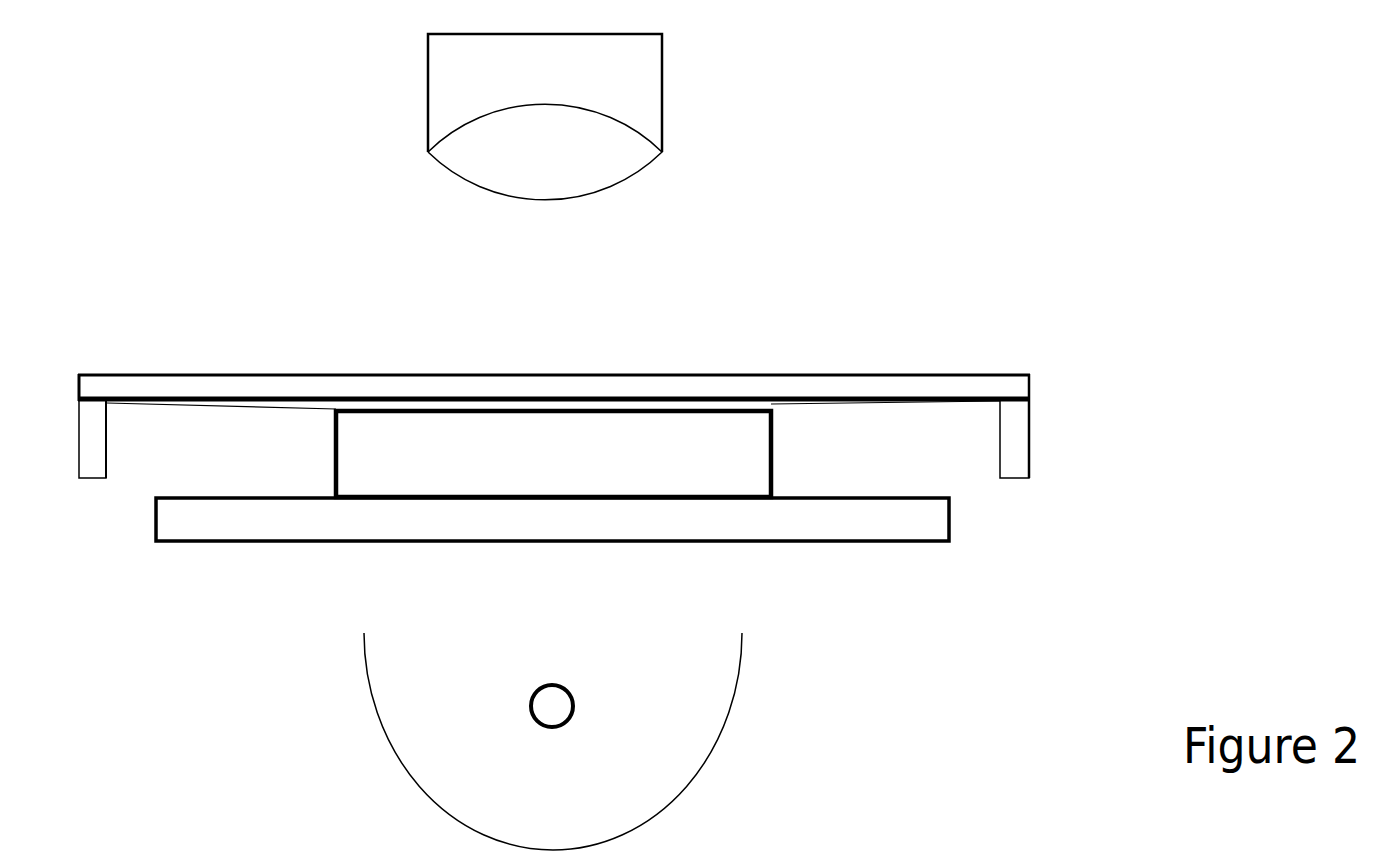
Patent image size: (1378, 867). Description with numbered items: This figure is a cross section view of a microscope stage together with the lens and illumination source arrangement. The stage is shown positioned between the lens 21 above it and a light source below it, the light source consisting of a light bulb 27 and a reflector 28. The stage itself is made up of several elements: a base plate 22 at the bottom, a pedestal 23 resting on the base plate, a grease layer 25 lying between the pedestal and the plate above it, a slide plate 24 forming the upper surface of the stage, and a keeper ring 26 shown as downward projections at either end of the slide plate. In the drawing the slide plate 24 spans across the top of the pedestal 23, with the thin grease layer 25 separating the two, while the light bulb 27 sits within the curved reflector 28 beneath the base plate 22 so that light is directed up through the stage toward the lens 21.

The lens 21 is at (623, 150).
The base plate 22 is at (880, 523).
The pedestal 23 is at (370, 468).
The slide plate 24 is at (1013, 382).
The grease layer 25 is at (772, 403).
The keeper ring 26 is at (92, 468).
The light bulb 27 is at (562, 698).
The reflector 28 is at (695, 767).